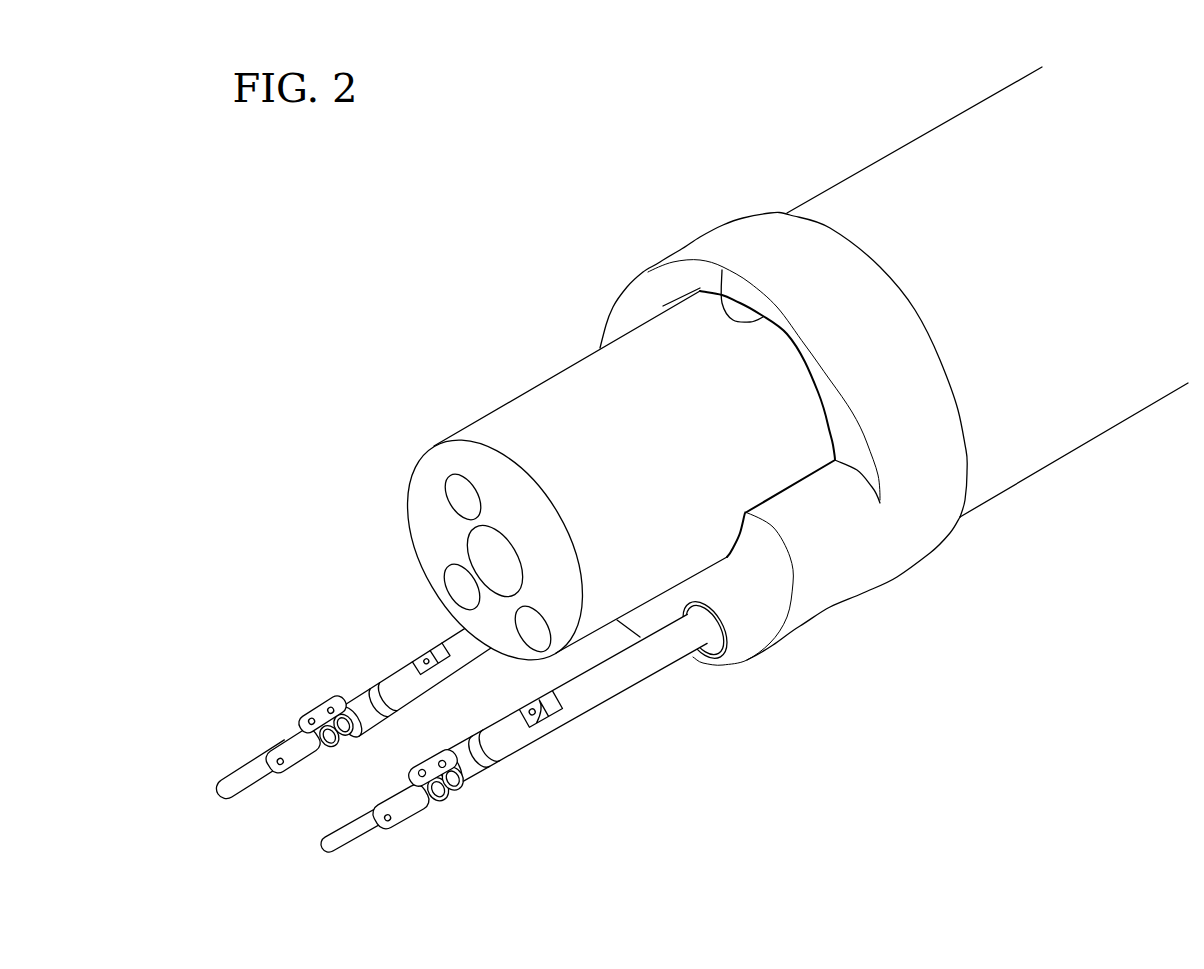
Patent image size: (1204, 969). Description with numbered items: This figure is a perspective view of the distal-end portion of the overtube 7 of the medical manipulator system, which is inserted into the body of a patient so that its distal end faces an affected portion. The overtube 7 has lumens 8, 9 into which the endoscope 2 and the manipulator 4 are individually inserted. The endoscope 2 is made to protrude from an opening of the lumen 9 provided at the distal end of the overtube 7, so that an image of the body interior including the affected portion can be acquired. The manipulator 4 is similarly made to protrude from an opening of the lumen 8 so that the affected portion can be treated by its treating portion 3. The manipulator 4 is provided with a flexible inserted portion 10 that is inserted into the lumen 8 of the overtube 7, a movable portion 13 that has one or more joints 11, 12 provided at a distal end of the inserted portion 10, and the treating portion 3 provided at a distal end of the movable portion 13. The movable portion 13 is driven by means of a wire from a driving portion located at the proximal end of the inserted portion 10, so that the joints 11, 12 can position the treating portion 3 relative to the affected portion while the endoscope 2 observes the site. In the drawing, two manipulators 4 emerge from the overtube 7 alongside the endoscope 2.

The endoscope 2 is at (565, 410).
The treating portion 3 is at (345, 846).
The manipulator 4 is at (534, 827).
The overtube 7 is at (936, 108).
The lumen 8 is at (718, 657).
The lumen 9 is at (722, 270).
The inserted portion 10 is at (620, 687).
The joint 11 is at (458, 821).
The joint 12 is at (568, 758).
The movable portion 13 is at (536, 778).